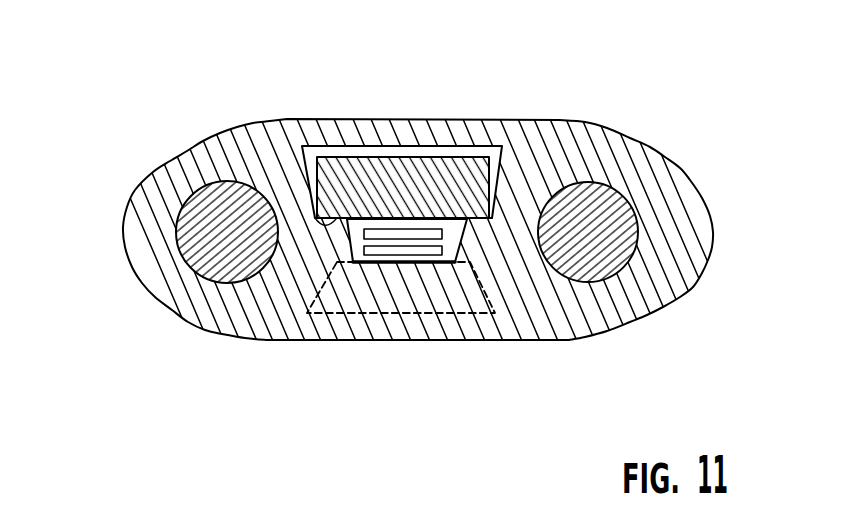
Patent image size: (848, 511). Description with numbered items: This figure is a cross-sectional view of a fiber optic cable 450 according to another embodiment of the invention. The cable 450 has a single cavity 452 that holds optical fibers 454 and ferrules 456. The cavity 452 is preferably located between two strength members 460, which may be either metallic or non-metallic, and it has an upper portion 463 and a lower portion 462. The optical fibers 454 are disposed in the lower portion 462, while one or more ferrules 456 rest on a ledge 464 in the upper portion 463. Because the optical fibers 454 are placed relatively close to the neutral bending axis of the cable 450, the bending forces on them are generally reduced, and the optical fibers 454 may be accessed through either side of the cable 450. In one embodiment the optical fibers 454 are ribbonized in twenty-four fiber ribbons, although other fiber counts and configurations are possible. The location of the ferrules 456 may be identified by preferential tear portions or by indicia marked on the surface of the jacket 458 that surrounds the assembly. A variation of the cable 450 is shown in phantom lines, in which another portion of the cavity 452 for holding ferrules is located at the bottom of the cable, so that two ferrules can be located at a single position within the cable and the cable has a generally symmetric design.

The cable 450 is at (702, 52).
The cavity 452 is at (500, 148).
The optical fibers 454 is at (440, 247).
The ferrules 456 is at (445, 175).
The jacket 458 is at (693, 283).
The strength members 460 is at (202, 257).
The lower portion 462 is at (343, 243).
The upper portion 463 is at (497, 165).
The ledge 464 is at (350, 262).